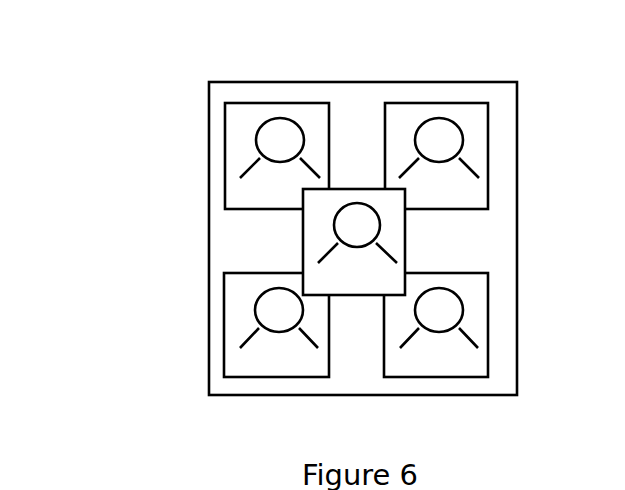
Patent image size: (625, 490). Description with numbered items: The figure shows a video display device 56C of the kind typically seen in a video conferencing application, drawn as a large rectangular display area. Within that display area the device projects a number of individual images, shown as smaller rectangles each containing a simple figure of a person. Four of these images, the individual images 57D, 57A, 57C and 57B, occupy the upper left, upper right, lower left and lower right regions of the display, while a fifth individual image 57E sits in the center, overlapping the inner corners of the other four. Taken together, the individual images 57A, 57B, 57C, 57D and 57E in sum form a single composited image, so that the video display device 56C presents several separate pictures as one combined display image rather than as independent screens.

The video display device 56C is at (147, 199).
The individual image 57A is at (440, 103).
The individual image 57B is at (430, 273).
The individual image 57C is at (236, 273).
The individual image 57D is at (238, 103).
The individual image 57E is at (343, 189).